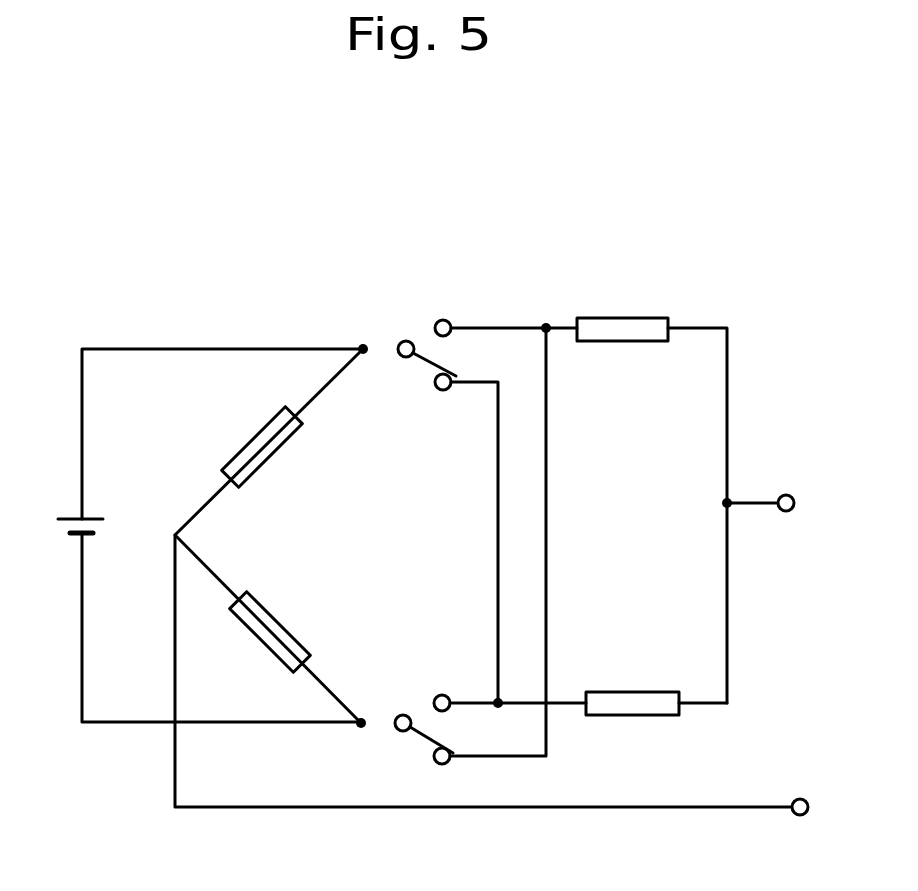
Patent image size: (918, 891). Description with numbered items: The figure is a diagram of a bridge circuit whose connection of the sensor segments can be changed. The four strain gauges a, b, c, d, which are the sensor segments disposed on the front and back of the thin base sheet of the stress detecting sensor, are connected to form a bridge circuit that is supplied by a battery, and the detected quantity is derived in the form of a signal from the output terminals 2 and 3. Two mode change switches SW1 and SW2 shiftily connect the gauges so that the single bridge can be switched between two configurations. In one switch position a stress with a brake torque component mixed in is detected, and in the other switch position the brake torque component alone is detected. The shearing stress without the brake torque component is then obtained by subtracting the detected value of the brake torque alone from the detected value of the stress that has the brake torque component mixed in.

The mode change switch SW1 is at (407, 334).
The mode change switch SW2 is at (404, 707).
The strain gauge a is at (258, 445).
The strain gauge b is at (266, 637).
The strain gauge c is at (622, 301).
The strain gauge d is at (632, 676).
The output terminal 2 is at (779, 504).
The output terminal 3 is at (821, 806).